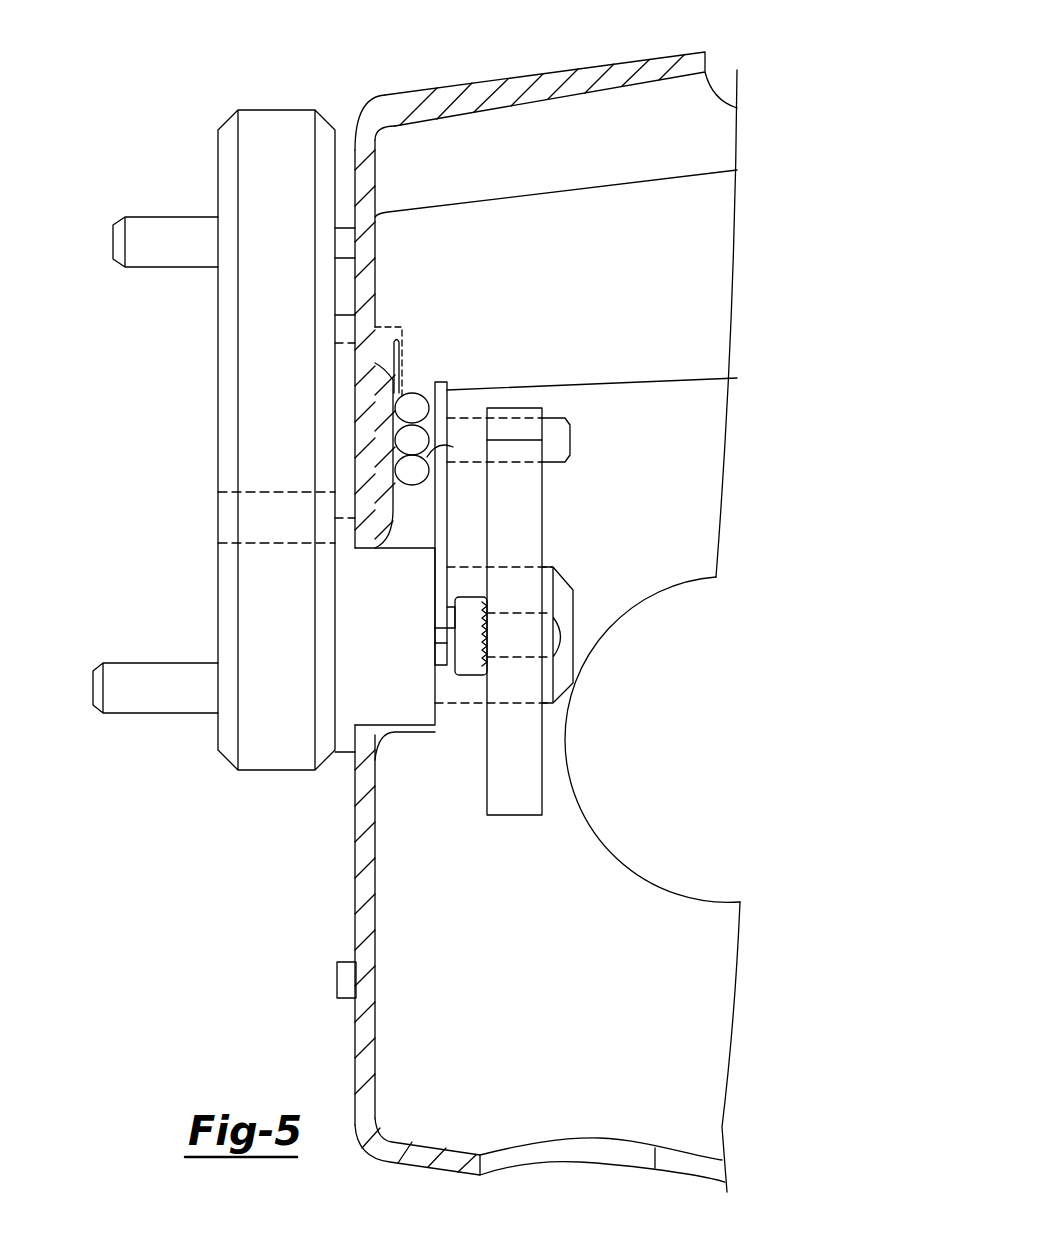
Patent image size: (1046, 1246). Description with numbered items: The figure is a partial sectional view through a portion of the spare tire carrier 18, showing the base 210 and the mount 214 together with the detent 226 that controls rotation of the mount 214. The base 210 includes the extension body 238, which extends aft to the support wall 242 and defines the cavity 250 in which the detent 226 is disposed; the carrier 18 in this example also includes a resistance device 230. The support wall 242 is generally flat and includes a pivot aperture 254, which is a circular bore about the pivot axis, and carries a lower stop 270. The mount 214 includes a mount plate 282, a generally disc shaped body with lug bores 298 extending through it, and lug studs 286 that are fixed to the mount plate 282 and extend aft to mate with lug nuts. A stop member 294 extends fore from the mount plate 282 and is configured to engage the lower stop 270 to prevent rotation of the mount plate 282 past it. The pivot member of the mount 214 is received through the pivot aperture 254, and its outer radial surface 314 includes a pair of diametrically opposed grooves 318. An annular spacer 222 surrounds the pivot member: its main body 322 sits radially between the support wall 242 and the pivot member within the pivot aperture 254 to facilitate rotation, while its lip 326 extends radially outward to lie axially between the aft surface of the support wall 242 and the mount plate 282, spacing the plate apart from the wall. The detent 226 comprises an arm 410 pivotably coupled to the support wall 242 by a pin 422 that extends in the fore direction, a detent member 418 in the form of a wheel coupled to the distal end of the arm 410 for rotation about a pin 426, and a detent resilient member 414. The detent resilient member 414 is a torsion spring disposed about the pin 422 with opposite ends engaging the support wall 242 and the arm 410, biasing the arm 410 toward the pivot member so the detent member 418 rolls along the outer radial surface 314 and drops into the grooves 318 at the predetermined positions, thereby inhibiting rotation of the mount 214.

The carrier 18 is at (145, 920).
The base 210 is at (457, 84).
The mount 214 is at (236, 104).
The spacer 222 is at (404, 702).
The detent 226 is at (549, 741).
The resistance device 230 is at (530, 493).
The extension body 238 is at (548, 90).
The support wall 242 is at (375, 893).
The cavity 250 is at (710, 248).
The pivot aperture 254 is at (397, 553).
The lower stop 270 is at (337, 980).
The mount plate 282 is at (283, 108).
The lug studs 286 is at (118, 222).
The stop member 294 is at (347, 245).
The lug bore 298 is at (256, 492).
The outer radial surface 314 is at (462, 703).
The grooves 318 is at (557, 637).
The main body 322 is at (385, 690).
The lip 326 is at (343, 668).
The arm 410 is at (437, 533).
The detent resilient member 414 is at (418, 398).
The detent member 418 is at (471, 598).
The pin 422 is at (553, 428).
The pin 426 is at (444, 620).